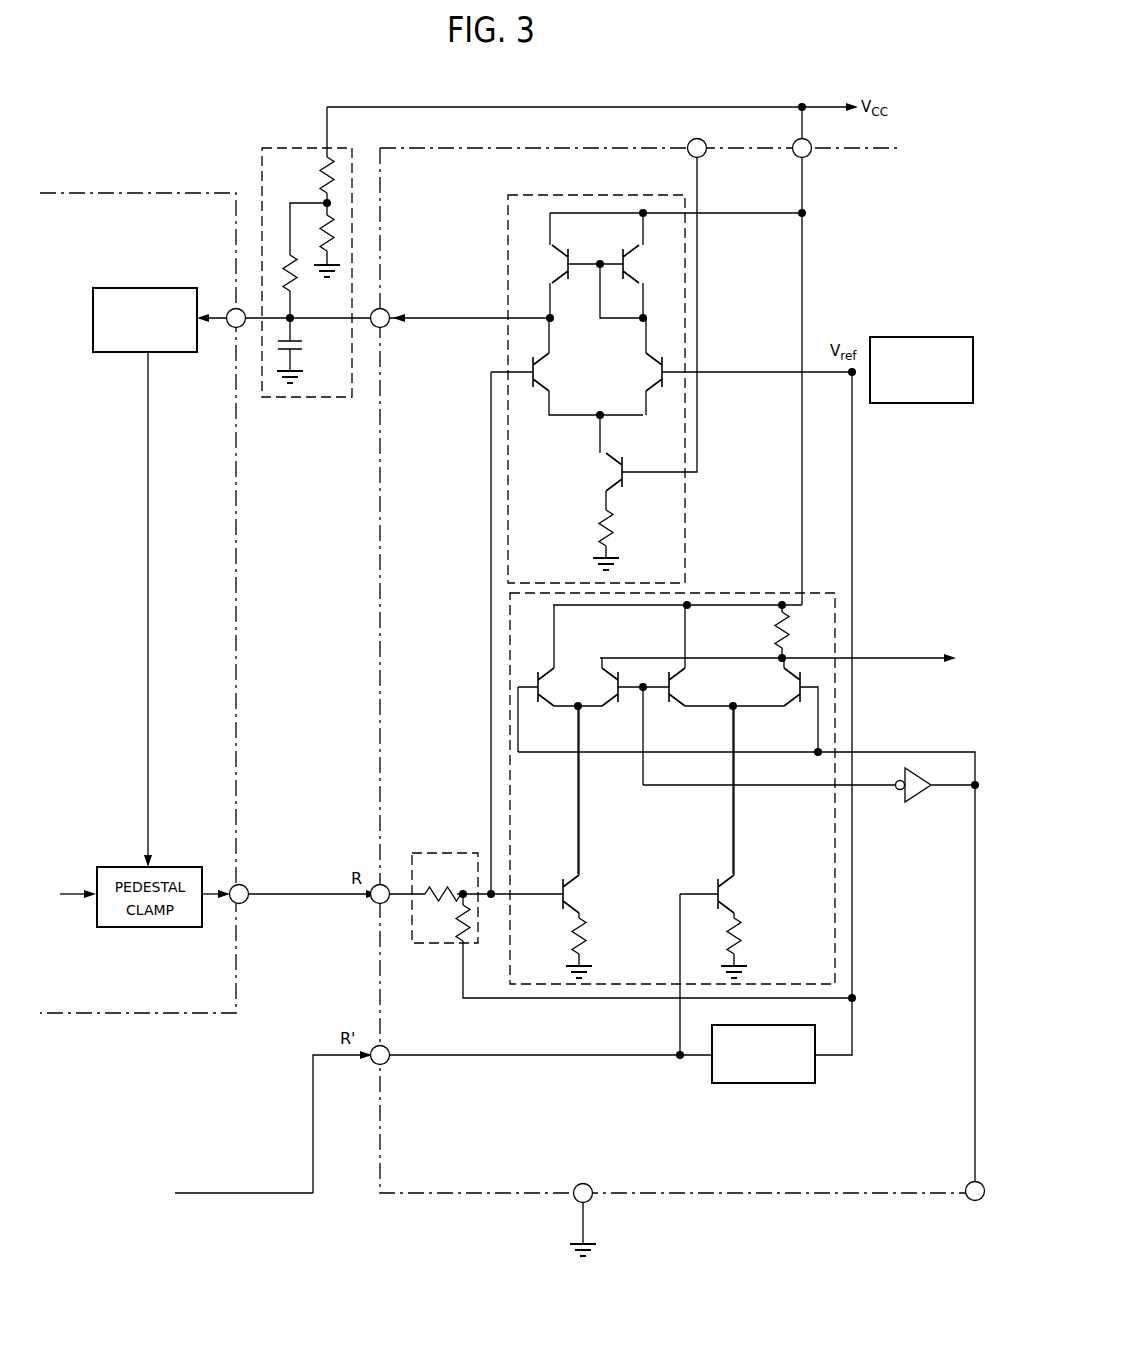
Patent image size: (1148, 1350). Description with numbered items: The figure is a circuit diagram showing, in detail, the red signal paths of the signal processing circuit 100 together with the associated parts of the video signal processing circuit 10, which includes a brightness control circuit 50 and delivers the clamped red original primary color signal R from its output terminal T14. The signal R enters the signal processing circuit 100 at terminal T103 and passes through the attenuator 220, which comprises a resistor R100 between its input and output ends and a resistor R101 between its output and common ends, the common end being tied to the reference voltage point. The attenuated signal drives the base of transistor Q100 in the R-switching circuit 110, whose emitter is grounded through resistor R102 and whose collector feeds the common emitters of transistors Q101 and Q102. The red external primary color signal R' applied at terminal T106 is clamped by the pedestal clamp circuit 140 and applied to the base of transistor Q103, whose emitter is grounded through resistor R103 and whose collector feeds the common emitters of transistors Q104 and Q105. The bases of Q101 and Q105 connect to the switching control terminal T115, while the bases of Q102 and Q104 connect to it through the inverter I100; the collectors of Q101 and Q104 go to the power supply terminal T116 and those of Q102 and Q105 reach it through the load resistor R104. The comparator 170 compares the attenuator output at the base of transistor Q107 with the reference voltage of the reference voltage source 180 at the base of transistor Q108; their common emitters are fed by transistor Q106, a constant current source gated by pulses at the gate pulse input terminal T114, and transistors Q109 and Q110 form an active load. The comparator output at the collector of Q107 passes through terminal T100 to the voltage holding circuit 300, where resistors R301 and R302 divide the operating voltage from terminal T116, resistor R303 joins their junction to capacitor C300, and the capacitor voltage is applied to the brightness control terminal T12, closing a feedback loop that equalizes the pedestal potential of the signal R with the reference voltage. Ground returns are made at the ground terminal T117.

The video signal processing circuit 10 is at (135, 190).
The brightness control circuit 50 is at (145, 288).
The signal processing circuit 100 is at (464, 148).
The R-switching circuit 110 is at (508, 642).
The pedestal clamp circuit 140 is at (746, 1083).
The comparator 170 is at (564, 188).
The reference voltage source 180 is at (908, 337).
The attenuator 220 is at (427, 852).
The voltage holding circuit 300 is at (306, 398).
The resistor R301 is at (320, 182).
The resistor R302 is at (334, 240).
The resistor R303 is at (298, 278).
The capacitor C300 is at (303, 346).
The brightness control terminal T12 is at (232, 327).
The output terminal T14 is at (248, 890).
The terminal T100 is at (420, 310).
The terminal T103 is at (374, 903).
The terminal T106 is at (374, 1064).
The gate pulse input terminal T114 is at (702, 140).
The switching control terminal T115 is at (970, 1200).
The power supply terminal T116 is at (814, 140).
The ground terminal T117 is at (592, 1200).
The transistor Q100 is at (580, 896).
The transistor Q101 is at (546, 690).
The transistor Q102 is at (622, 698).
The transistor Q103 is at (738, 896).
The transistor Q104 is at (725, 739).
The transistor Q105 is at (787, 707).
The transistor Q106 is at (610, 472).
The transistor Q107 is at (545, 380).
The transistor Q108 is at (660, 378).
The transistor Q109 is at (566, 264).
The transistor Q110 is at (632, 266).
The resistor R100 is at (471, 883).
The resistor R101 is at (458, 930).
The resistor R102 is at (590, 940).
The resistor R103 is at (745, 940).
The load resistor R104 is at (778, 628).
The inverter I100 is at (914, 808).